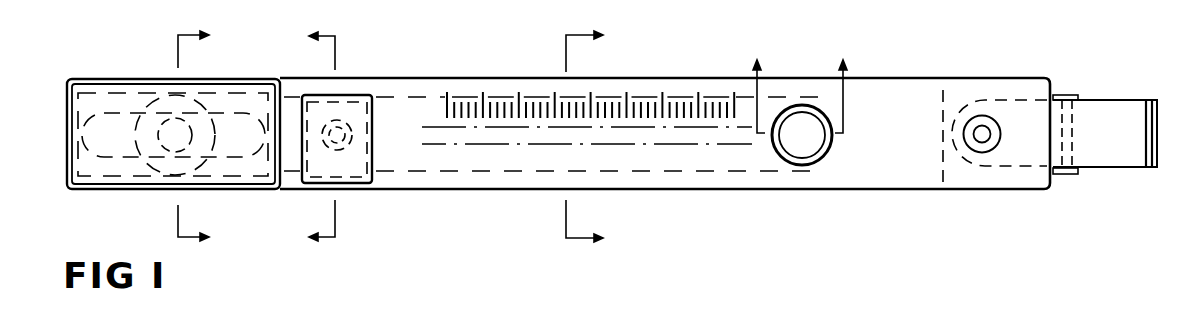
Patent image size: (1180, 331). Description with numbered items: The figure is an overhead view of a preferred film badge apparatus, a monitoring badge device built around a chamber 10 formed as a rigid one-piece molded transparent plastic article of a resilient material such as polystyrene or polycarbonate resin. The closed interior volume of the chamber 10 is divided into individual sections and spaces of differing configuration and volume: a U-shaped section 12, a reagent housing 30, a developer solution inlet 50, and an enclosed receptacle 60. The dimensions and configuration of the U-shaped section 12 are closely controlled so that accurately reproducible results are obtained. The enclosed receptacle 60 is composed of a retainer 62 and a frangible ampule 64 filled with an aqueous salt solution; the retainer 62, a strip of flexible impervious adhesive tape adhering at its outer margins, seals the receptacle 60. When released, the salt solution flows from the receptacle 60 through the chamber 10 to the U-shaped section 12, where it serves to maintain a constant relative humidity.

The chamber 10 is at (903, 79).
The U-shaped section 12 is at (648, 190).
The reagent housing 30 is at (798, 123).
The developer solution inlet 50 is at (340, 130).
The enclosed receptacle 60 is at (66, 95).
The retainer 62 is at (147, 107).
The frangible ampule 64 is at (117, 157).